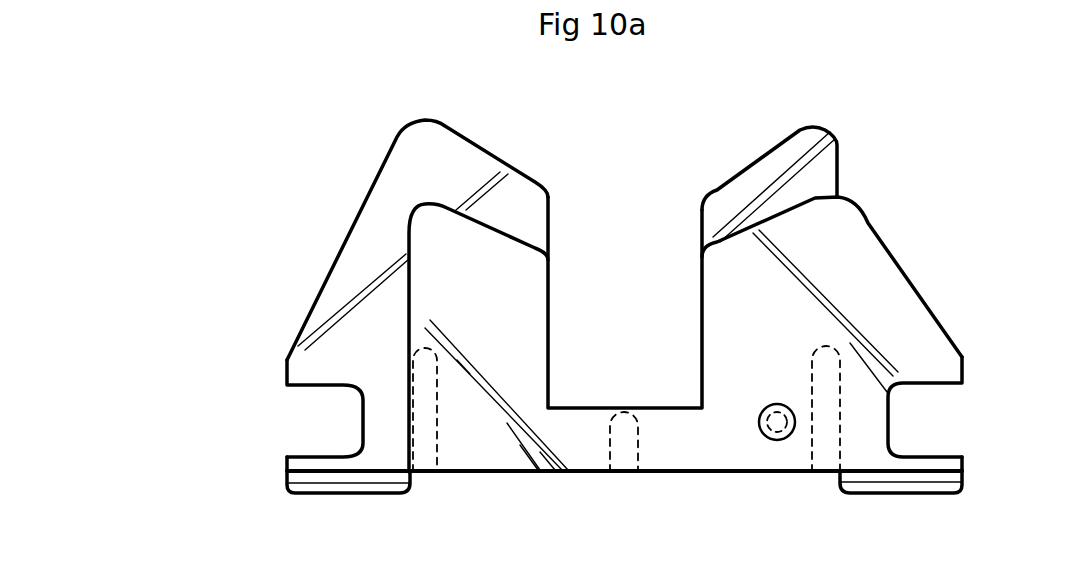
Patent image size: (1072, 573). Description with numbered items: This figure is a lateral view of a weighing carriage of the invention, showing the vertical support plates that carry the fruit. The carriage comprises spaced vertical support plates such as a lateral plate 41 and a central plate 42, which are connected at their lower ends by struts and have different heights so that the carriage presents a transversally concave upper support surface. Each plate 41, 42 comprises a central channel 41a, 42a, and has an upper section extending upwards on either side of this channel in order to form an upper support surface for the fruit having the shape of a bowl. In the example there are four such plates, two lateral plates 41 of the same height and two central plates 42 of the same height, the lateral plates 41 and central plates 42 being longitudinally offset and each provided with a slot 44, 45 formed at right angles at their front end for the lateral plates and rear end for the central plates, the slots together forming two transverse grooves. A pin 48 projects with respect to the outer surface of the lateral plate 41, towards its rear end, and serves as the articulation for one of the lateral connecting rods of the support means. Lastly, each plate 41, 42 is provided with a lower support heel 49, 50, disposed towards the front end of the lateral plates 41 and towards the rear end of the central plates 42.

The lateral plate 41 is at (840, 152).
The central channel 41a is at (702, 343).
The central plate 42 is at (857, 233).
The central channel 42a is at (540, 190).
The slot 44 is at (303, 415).
The slot 45 is at (925, 418).
The pin 48 is at (780, 433).
The lower support heel 49 is at (370, 488).
The lower support heel 50 is at (905, 488).